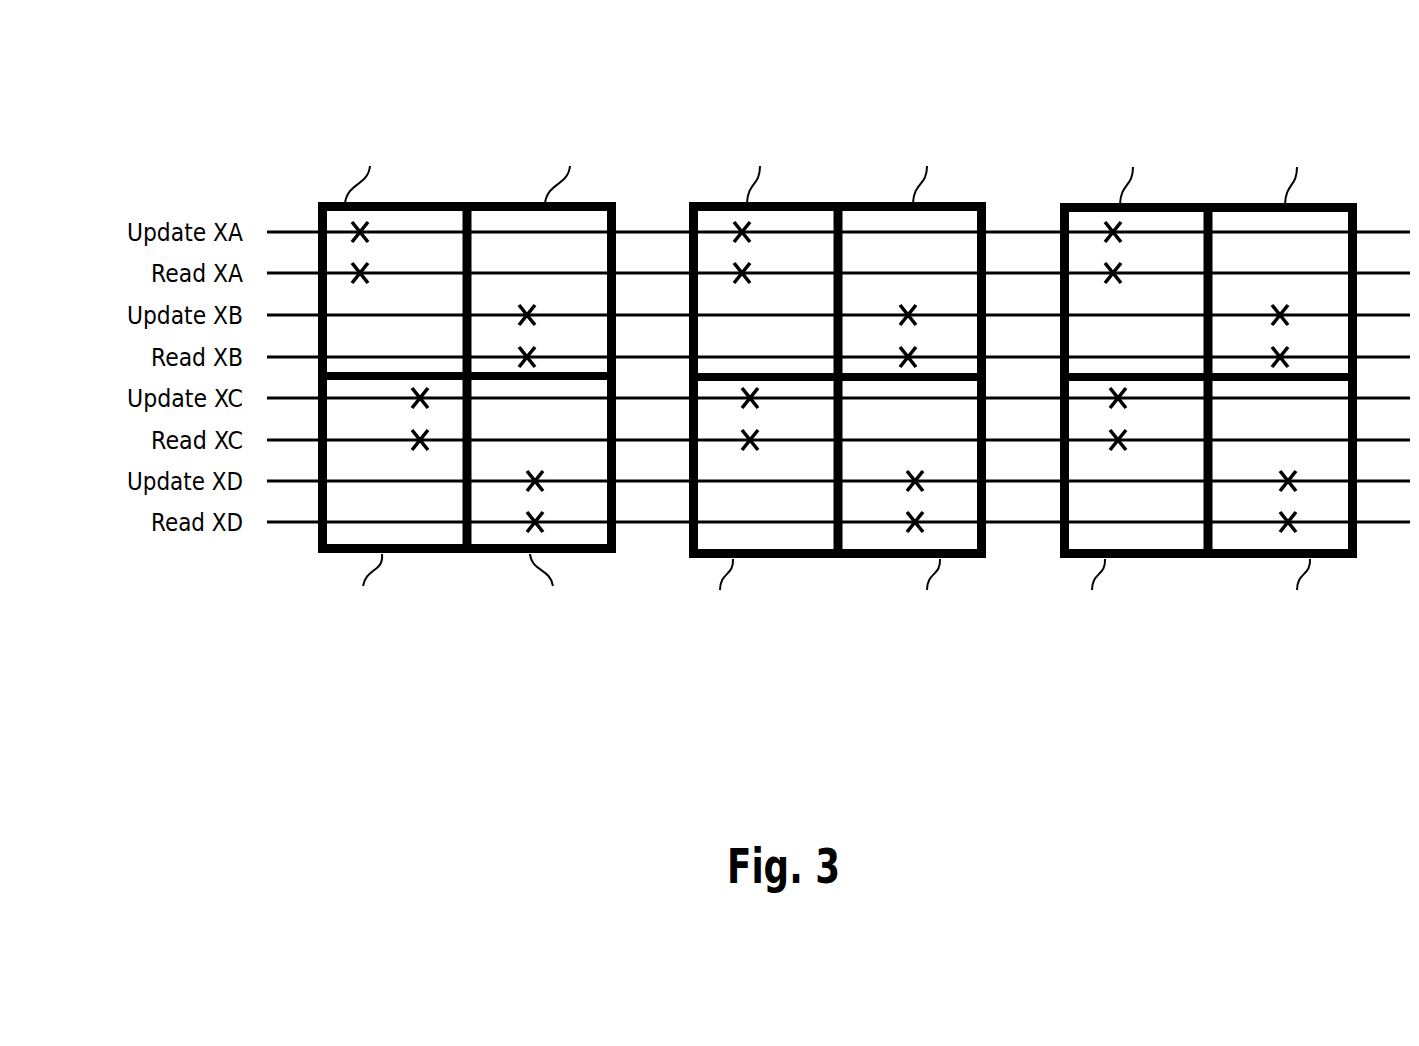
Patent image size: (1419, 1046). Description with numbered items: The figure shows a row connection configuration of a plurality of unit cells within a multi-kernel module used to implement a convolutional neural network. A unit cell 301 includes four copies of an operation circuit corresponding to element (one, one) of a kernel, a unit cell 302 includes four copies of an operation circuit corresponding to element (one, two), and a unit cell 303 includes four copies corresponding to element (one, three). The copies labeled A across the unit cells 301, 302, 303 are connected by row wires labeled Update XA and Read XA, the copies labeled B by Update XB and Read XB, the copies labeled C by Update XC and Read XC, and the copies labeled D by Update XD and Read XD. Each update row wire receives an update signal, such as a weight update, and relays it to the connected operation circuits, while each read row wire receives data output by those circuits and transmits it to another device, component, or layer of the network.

The unit cell 301 is at (457, 158).
The unit cell 302 is at (863, 167).
The unit cell 303 is at (1231, 177).